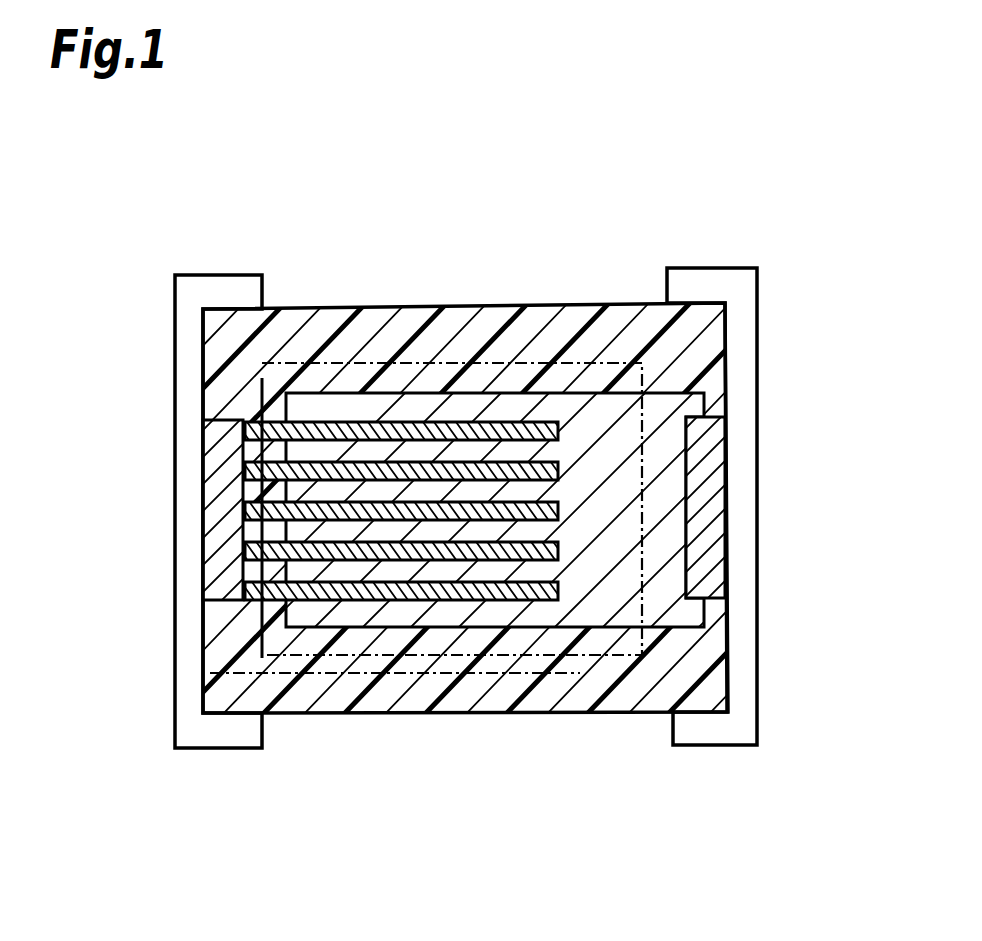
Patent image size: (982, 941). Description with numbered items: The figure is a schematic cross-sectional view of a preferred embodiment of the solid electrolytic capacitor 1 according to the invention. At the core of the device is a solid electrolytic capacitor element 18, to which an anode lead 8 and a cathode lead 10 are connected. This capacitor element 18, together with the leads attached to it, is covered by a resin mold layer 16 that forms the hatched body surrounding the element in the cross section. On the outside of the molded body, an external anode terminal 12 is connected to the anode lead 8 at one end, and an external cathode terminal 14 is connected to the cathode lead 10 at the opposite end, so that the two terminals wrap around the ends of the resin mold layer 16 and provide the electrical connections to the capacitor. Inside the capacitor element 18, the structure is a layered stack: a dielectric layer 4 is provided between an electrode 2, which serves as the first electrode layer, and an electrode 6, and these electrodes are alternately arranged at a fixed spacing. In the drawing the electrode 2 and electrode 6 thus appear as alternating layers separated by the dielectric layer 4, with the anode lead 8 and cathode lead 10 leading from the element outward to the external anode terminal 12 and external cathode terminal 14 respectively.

The solid electrolytic capacitor 1 is at (701, 162).
The electrode 2 is at (270, 600).
The dielectric layer 4 is at (330, 600).
The electrode 6 is at (592, 597).
The anode lead 8 is at (231, 421).
The cathode lead 10 is at (712, 416).
The external anode terminal 12 is at (203, 273).
The external cathode terminal 14 is at (757, 350).
The resin mold layer 16 is at (348, 306).
The solid electrolytic capacitor element 18 is at (493, 362).